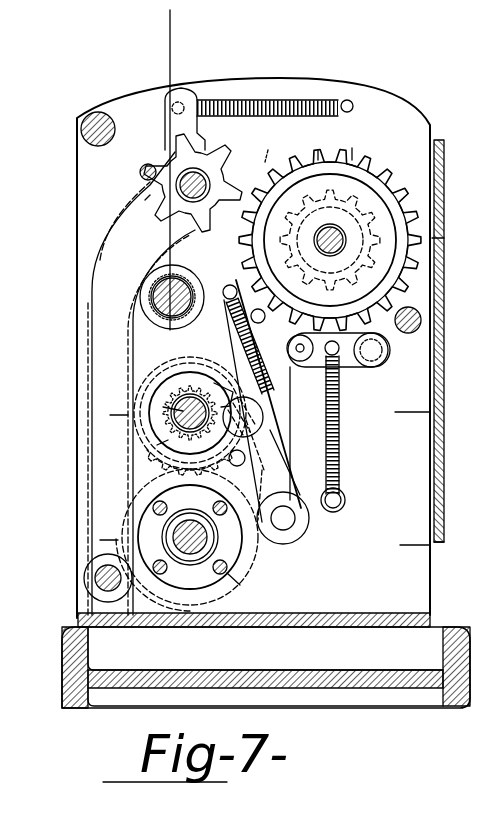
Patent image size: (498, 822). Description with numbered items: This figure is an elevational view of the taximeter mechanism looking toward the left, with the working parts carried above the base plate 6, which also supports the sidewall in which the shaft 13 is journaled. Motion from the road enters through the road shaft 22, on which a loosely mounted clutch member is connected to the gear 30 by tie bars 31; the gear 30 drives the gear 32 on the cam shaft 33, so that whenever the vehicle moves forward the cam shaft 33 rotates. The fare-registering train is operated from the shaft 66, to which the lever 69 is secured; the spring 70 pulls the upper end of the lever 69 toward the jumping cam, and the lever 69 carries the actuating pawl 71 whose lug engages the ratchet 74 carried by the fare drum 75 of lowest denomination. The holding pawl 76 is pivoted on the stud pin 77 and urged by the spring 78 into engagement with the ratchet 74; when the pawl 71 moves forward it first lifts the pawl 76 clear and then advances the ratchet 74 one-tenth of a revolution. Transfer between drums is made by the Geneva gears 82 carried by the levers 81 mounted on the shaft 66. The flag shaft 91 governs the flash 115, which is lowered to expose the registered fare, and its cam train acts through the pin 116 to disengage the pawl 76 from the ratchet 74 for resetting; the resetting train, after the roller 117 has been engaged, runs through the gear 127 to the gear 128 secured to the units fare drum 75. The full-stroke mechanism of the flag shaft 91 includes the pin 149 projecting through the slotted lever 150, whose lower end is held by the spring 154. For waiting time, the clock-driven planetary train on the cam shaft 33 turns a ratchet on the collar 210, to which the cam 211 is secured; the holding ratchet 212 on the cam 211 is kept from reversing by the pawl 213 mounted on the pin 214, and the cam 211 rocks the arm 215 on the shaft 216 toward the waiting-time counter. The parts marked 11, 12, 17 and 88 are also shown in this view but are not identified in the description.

The base plate 6 is at (358, 614).
The frame 11 is at (118, 300).
The side plate 12 is at (110, 415).
The shaft 13 is at (100, 540).
The base 17 is at (307, 673).
The road shaft 22 is at (203, 545).
The gear 30 is at (245, 566).
The tie bars 31 is at (240, 585).
The gear 32 is at (190, 405).
The cam shaft 33 is at (173, 420).
The shaft 66 is at (96, 578).
The lever 69 is at (145, 200).
The spring 70 is at (262, 105).
The actuating pawl 71 is at (238, 117).
The ratchet 74 is at (330, 237).
The fare drum 75 is at (318, 150).
The holding pawl 76 is at (398, 173).
The stud pin 77 is at (373, 356).
The spring 78 is at (341, 432).
The levers 81 is at (125, 221).
The Geneva gears 82 is at (155, 161).
The rod 88 is at (170, 48).
The flag shaft 91 is at (165, 312).
The flash 115 is at (438, 443).
The pin 116 is at (300, 361).
The roller 117 is at (444, 238).
The gear 127 is at (268, 150).
The gear 128 is at (352, 148).
The pin 149 is at (226, 285).
The lever 150 is at (269, 327).
The spring 154 is at (229, 411).
The collar 210 is at (163, 407).
The cam 211 is at (157, 445).
The holding ratchet 212 is at (230, 401).
The pawl 213 is at (282, 392).
The pin 214 is at (280, 420).
The arm 215 is at (290, 440).
The shaft 216 is at (283, 518).